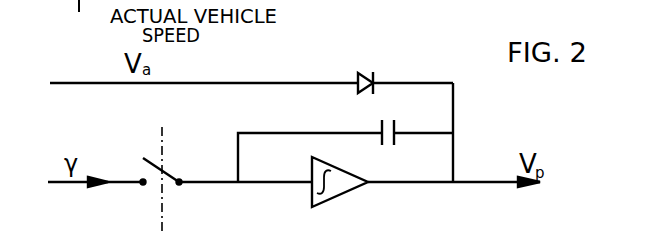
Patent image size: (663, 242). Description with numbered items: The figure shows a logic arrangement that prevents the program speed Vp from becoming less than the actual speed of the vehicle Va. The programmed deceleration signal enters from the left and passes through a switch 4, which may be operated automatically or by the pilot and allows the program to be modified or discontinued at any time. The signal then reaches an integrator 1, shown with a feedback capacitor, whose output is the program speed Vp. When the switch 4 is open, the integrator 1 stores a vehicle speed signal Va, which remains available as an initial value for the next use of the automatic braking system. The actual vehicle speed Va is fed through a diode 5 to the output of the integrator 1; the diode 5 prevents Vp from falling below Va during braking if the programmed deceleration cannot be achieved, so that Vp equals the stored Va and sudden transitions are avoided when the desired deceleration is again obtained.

The integrator 1 is at (332, 185).
The switch 4 is at (168, 174).
The diode 5 is at (358, 77).